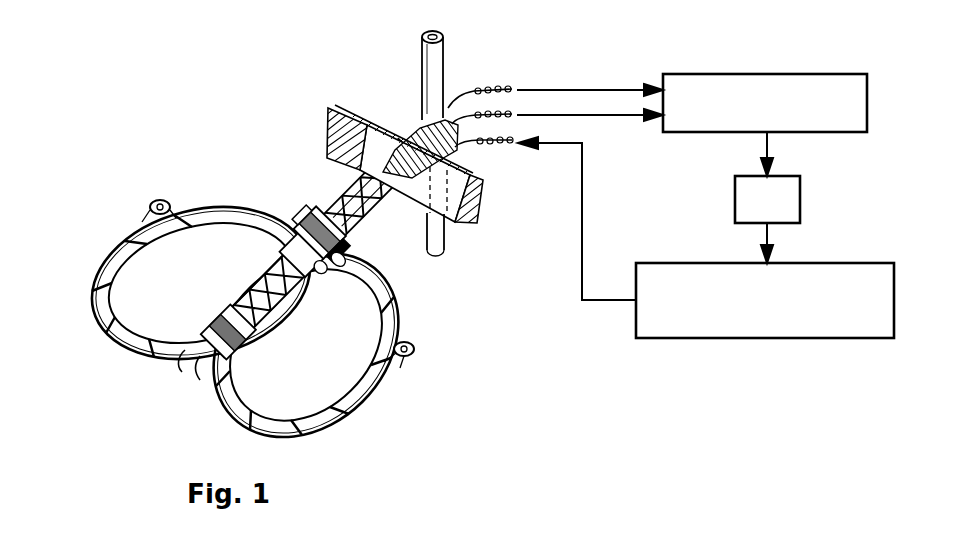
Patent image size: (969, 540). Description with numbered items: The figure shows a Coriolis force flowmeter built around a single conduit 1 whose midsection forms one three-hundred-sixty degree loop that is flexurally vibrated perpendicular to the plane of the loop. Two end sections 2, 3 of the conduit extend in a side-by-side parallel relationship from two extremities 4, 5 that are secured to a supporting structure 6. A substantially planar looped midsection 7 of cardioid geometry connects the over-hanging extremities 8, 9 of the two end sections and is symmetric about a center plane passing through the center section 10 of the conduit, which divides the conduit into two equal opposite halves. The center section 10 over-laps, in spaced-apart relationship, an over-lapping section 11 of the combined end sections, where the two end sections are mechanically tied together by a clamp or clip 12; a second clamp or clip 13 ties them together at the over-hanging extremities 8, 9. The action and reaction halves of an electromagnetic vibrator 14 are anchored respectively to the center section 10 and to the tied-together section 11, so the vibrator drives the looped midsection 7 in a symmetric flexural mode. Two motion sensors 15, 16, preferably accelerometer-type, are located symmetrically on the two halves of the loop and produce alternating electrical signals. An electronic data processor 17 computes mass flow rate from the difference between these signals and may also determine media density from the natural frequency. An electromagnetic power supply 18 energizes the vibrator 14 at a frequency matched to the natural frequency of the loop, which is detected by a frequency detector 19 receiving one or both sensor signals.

The conduit 1 is at (108, 252).
The end section 2 is at (262, 268).
The end section 3 is at (284, 288).
The extremity of the conduit 4 is at (380, 150).
The extremity of the conduit 5 is at (417, 190).
The supporting structure 6 is at (333, 132).
The looped midsection 7 is at (268, 212).
The over-hanging extremity 8 is at (190, 358).
The over-hanging extremity 9 is at (198, 362).
The center section of the conduit 10 is at (308, 216).
The over-lapping section 11 is at (306, 266).
The clamp or clip 12 is at (282, 256).
The clamp or clip 13 is at (205, 316).
The electromagnetic vibrator 14 is at (340, 262).
The motion sensor 15 is at (152, 205).
The motion sensor 16 is at (410, 354).
The electronic data processor 17 is at (767, 74).
The electromagnetic power supply 18 is at (769, 338).
The frequency detector 19 is at (800, 198).